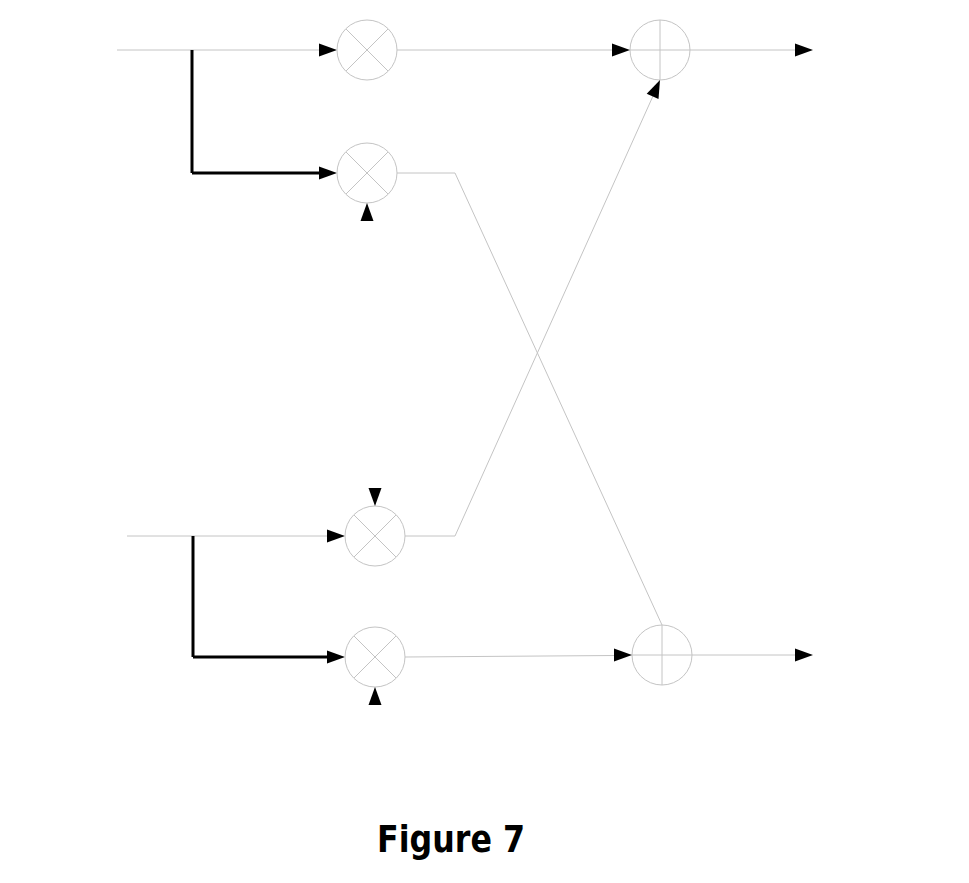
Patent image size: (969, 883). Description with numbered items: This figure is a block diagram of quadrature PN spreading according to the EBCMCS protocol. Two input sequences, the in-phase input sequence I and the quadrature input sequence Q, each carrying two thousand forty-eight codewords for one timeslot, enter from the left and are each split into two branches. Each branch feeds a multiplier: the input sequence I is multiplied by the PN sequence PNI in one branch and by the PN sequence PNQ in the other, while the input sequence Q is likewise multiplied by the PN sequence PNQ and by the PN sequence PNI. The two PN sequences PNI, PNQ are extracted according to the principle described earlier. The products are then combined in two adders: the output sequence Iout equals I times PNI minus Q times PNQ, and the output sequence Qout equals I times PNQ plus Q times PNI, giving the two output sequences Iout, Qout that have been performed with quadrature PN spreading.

The input sequence I is at (117, 50).
The input sequence Q is at (127, 536).
The PN sequence PN_Q PNQ is at (367, 218).
The PN sequence PN_I PNI is at (375, 702).
The output sequence I' Iout is at (813, 50).
The output sequence Q' Qout is at (813, 655).